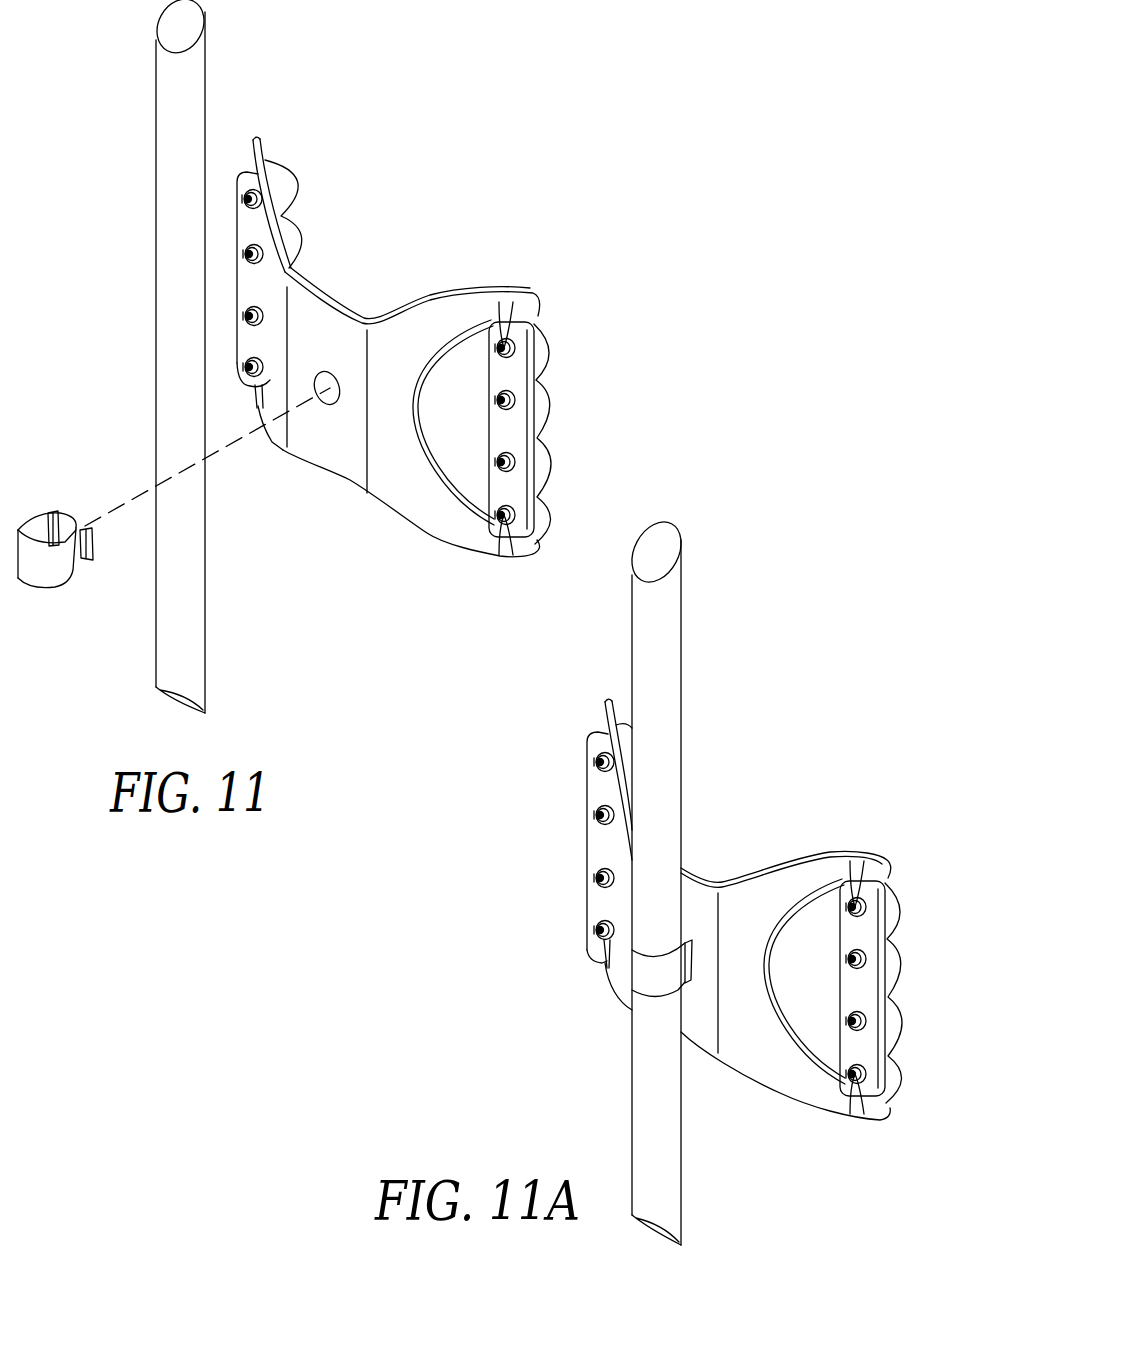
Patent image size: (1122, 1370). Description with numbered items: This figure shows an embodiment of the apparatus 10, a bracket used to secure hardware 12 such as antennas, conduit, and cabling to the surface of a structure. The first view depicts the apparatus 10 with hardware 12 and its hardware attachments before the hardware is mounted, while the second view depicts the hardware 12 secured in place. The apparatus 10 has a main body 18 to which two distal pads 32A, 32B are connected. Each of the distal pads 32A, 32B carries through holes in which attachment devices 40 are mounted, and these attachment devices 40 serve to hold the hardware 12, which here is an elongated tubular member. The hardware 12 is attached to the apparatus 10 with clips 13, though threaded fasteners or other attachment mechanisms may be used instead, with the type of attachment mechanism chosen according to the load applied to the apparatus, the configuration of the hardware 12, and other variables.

In FIG. 11, the apparatus 10 is at (434, 347).
In FIG. 11, the hardware 12 is at (172, 320).
In FIG. 11A, the hardware 12 is at (670, 673).
In FIG. 11, the clips 13 is at (37, 590).
In FIG. 11A, the clips 13 is at (650, 995).
In FIG. 11A, the main body 18 is at (709, 935).
In FIG. 11A, the distal pad 32A is at (878, 925).
In FIG. 11A, the distal pad 32B is at (587, 846).
In FIG. 11, the attachment devices 40 is at (553, 447).
In FIG. 11A, the attachment devices 40 is at (898, 1083).